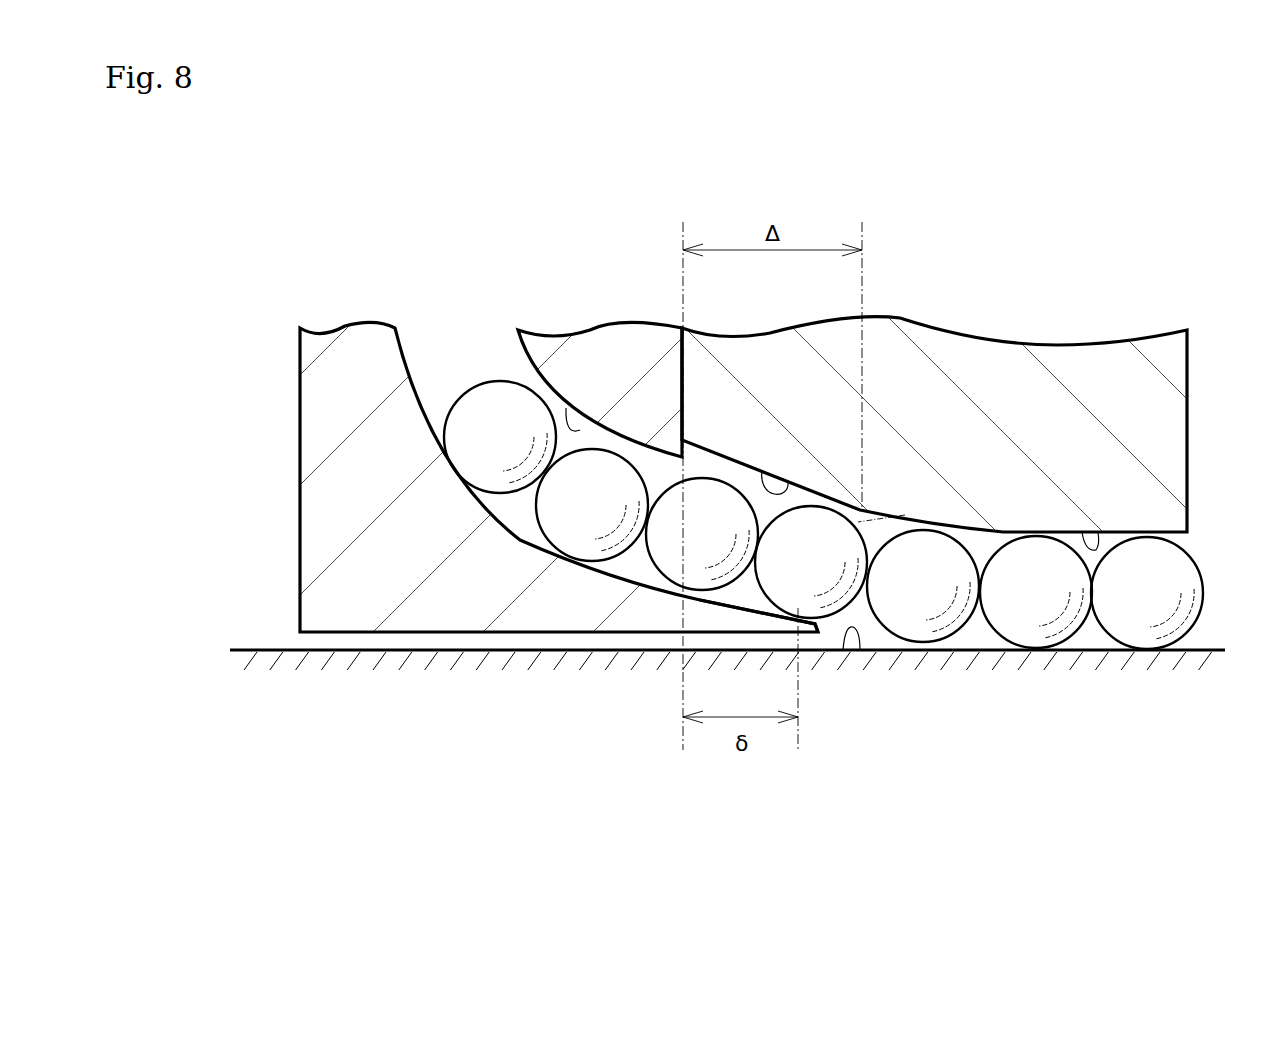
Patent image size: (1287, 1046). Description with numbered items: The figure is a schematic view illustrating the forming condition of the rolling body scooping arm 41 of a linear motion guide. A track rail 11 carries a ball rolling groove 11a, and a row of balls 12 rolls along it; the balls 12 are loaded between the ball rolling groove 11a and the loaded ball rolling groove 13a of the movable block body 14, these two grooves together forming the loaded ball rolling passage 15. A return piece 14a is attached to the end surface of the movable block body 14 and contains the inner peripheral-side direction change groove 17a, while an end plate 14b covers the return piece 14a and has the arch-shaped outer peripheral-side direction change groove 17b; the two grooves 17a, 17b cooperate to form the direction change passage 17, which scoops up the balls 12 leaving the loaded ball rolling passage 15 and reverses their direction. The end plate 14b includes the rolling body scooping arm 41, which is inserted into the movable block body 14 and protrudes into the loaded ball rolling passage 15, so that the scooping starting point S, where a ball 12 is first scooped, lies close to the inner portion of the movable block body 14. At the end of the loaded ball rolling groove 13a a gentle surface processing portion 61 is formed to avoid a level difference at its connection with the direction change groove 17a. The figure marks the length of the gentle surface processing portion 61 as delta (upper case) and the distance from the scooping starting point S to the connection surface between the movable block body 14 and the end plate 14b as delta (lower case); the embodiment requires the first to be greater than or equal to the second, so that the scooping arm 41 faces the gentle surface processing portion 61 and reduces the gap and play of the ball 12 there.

The track rail 11 is at (955, 691).
The ball rolling groove 11a is at (851, 651).
The ball 12 is at (572, 525).
The loaded ball rolling groove 13a is at (1100, 530).
The movable block body 14 is at (965, 355).
The return piece 14a is at (625, 353).
The end plate 14b is at (370, 582).
The loaded ball rolling passage 15 is at (1088, 640).
The direction change passage 17 is at (437, 365).
The inner peripheral-side direction change groove 17a is at (585, 380).
The outer peripheral-side direction change groove 17b is at (408, 403).
The rolling body scooping arm 41 is at (747, 622).
The gentle surface processing portion 61 is at (795, 490).
The scooping starting point S is at (905, 515).